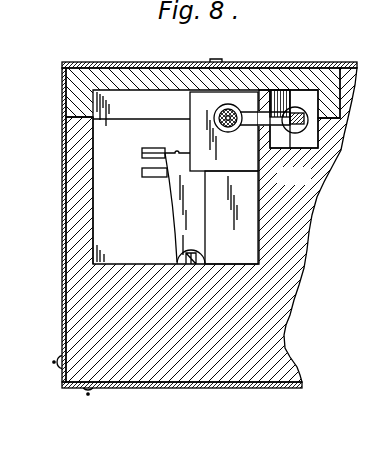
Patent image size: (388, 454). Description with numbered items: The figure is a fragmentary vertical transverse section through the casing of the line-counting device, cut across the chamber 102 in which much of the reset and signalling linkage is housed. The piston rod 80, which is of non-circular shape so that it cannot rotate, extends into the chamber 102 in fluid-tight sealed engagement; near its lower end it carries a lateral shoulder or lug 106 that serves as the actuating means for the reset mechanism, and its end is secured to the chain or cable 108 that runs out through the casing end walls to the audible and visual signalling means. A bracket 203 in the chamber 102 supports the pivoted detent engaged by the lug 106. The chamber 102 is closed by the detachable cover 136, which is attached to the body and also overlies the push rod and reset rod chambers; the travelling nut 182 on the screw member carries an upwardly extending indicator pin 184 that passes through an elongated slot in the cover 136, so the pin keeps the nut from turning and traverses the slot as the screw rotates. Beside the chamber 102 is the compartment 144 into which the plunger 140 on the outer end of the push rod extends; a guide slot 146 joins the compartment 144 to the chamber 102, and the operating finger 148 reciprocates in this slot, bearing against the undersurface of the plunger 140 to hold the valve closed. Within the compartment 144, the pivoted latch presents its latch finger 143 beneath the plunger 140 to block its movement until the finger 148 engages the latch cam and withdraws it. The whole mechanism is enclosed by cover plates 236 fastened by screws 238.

The piston rod 80 is at (178, 262).
The chamber 102 is at (101, 195).
The lateral shoulder or lug 106 is at (186, 208).
The chain or cable 108 is at (203, 263).
The detachable cover 136 is at (92, 72).
The plunger 140 is at (292, 149).
The latch finger 143 is at (306, 128).
The compartment 144 is at (306, 97).
The guide slot 146 is at (258, 134).
The operating finger 148 is at (277, 118).
The travelling nut 182 is at (202, 104).
The indicator pin 184 is at (212, 56).
The bracket 203 is at (150, 148).
The cover plates 236 is at (62, 263).
The screws 238 is at (52, 372).